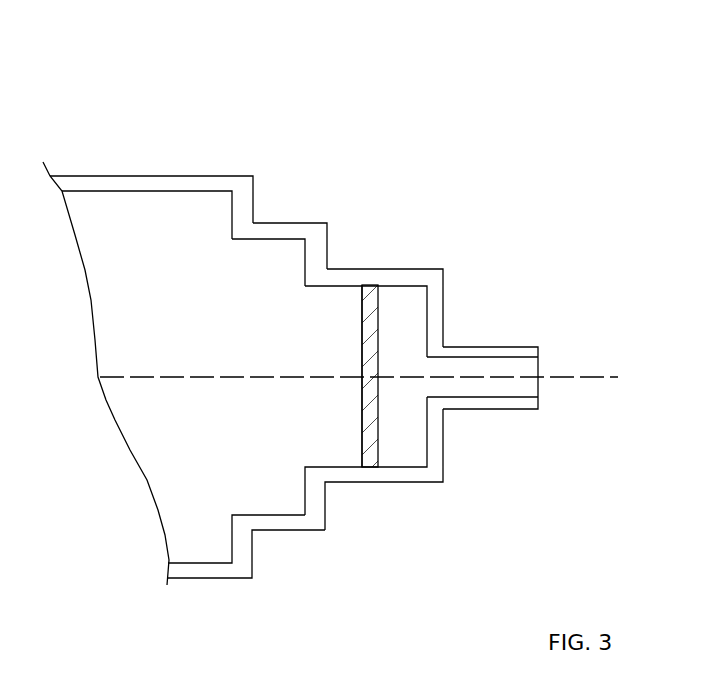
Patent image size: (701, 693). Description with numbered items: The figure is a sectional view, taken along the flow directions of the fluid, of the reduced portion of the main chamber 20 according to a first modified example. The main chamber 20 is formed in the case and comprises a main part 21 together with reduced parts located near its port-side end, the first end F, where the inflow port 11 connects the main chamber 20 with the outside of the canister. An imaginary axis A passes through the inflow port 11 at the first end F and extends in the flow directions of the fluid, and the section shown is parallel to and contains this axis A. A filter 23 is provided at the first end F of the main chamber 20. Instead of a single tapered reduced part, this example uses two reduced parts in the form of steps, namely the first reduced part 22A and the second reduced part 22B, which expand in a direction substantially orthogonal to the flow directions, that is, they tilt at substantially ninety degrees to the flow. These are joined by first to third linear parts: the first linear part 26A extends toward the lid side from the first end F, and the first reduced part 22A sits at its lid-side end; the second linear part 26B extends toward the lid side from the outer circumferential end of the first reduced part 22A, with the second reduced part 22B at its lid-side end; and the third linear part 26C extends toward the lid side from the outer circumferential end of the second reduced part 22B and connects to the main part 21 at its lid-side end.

The main chamber 20 is at (173, 334).
The main part 21 is at (110, 182).
The third linear part 26C is at (207, 182).
The second linear part 26B is at (287, 228).
The first linear part 26A is at (338, 277).
The inflow port 11 is at (508, 350).
The first reduced part 22A is at (318, 503).
The second reduced part 22B is at (247, 547).
The filter 23 is at (361, 409).
The first end F is at (361, 339).
The axis A is at (603, 377).